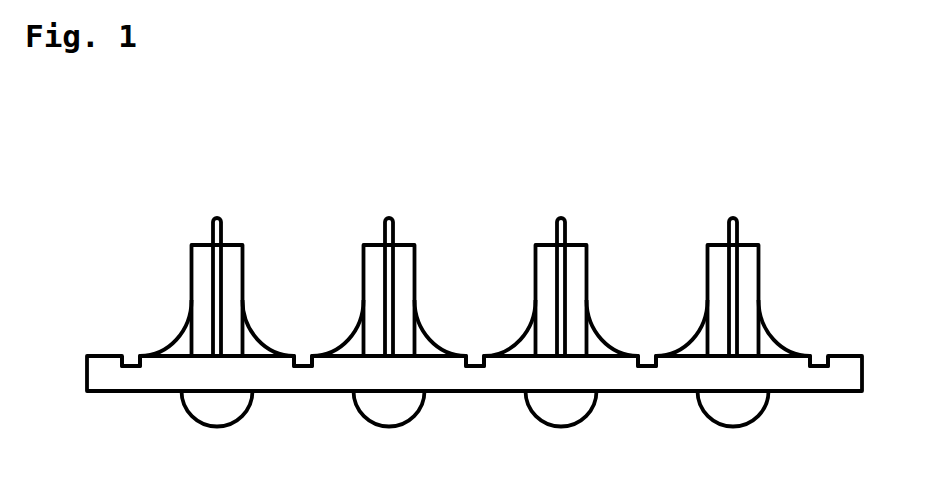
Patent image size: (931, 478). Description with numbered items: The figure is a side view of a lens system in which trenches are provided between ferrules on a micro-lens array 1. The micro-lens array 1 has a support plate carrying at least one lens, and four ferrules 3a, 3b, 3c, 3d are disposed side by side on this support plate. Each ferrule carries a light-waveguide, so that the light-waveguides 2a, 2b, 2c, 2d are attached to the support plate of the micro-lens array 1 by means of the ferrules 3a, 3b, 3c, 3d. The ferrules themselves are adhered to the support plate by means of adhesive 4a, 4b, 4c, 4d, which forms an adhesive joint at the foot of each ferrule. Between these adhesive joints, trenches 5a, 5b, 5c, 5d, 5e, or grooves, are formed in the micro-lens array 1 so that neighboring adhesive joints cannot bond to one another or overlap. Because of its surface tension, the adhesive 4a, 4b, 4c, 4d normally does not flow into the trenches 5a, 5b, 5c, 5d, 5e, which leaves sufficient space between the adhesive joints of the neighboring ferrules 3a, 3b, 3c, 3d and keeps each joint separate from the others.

The micro-lens array 1 is at (95, 368).
The light-waveguide 2a is at (217, 213).
The ferrule 3a is at (234, 262).
The adhesive 4a is at (182, 337).
The light-waveguide 2b is at (389, 213).
The ferrule 3b is at (406, 262).
The adhesive 4b is at (354, 337).
The light-waveguide 2c is at (561, 213).
The ferrule 3c is at (578, 262).
The adhesive 4c is at (526, 337).
The light-waveguide 2d is at (733, 213).
The ferrule 3d is at (750, 262).
The adhesive 4d is at (698, 337).
The trench 5a is at (130, 367).
The trench 5b is at (302, 367).
The trench 5c is at (474, 367).
The trench 5d is at (646, 367).
The trench 5e is at (818, 367).